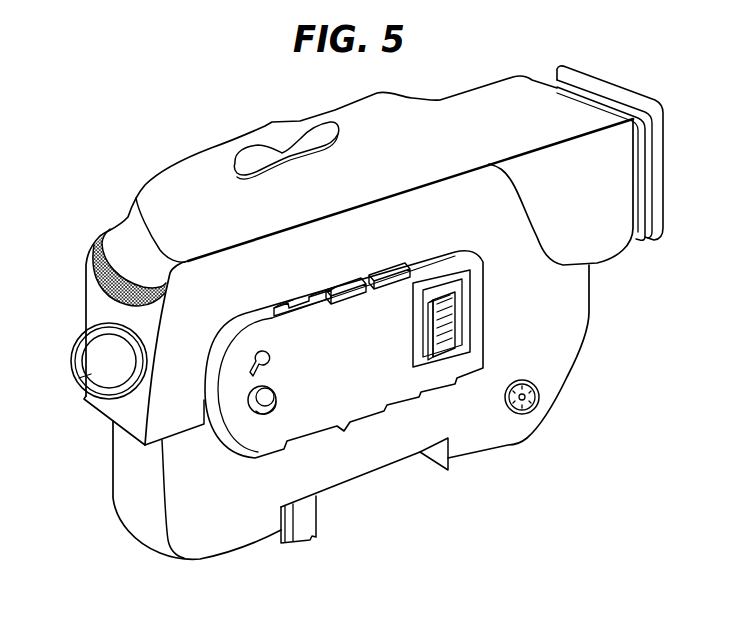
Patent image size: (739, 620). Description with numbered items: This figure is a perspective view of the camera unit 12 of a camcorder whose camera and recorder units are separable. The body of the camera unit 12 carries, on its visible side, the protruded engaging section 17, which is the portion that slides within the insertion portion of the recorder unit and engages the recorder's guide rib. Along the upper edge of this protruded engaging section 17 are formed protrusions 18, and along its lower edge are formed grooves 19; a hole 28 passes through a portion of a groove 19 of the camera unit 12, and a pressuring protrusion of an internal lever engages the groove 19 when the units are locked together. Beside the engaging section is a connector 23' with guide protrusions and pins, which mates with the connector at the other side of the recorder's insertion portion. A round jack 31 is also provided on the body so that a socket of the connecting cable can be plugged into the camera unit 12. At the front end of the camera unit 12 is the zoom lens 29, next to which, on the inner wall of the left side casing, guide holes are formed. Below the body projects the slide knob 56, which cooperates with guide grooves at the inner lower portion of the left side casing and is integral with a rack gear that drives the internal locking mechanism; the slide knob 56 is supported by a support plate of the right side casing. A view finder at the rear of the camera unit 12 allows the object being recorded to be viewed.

The camera unit 12 is at (347, 324).
The protruded engaging section 17 is at (483, 340).
The protrusions 18 is at (337, 283).
The grooves 19 is at (385, 264).
The connector 23' is at (396, 337).
The hole 28 is at (290, 304).
The zoom lens 29 is at (81, 384).
The jack 31 is at (538, 400).
The slide knob 56 is at (307, 543).